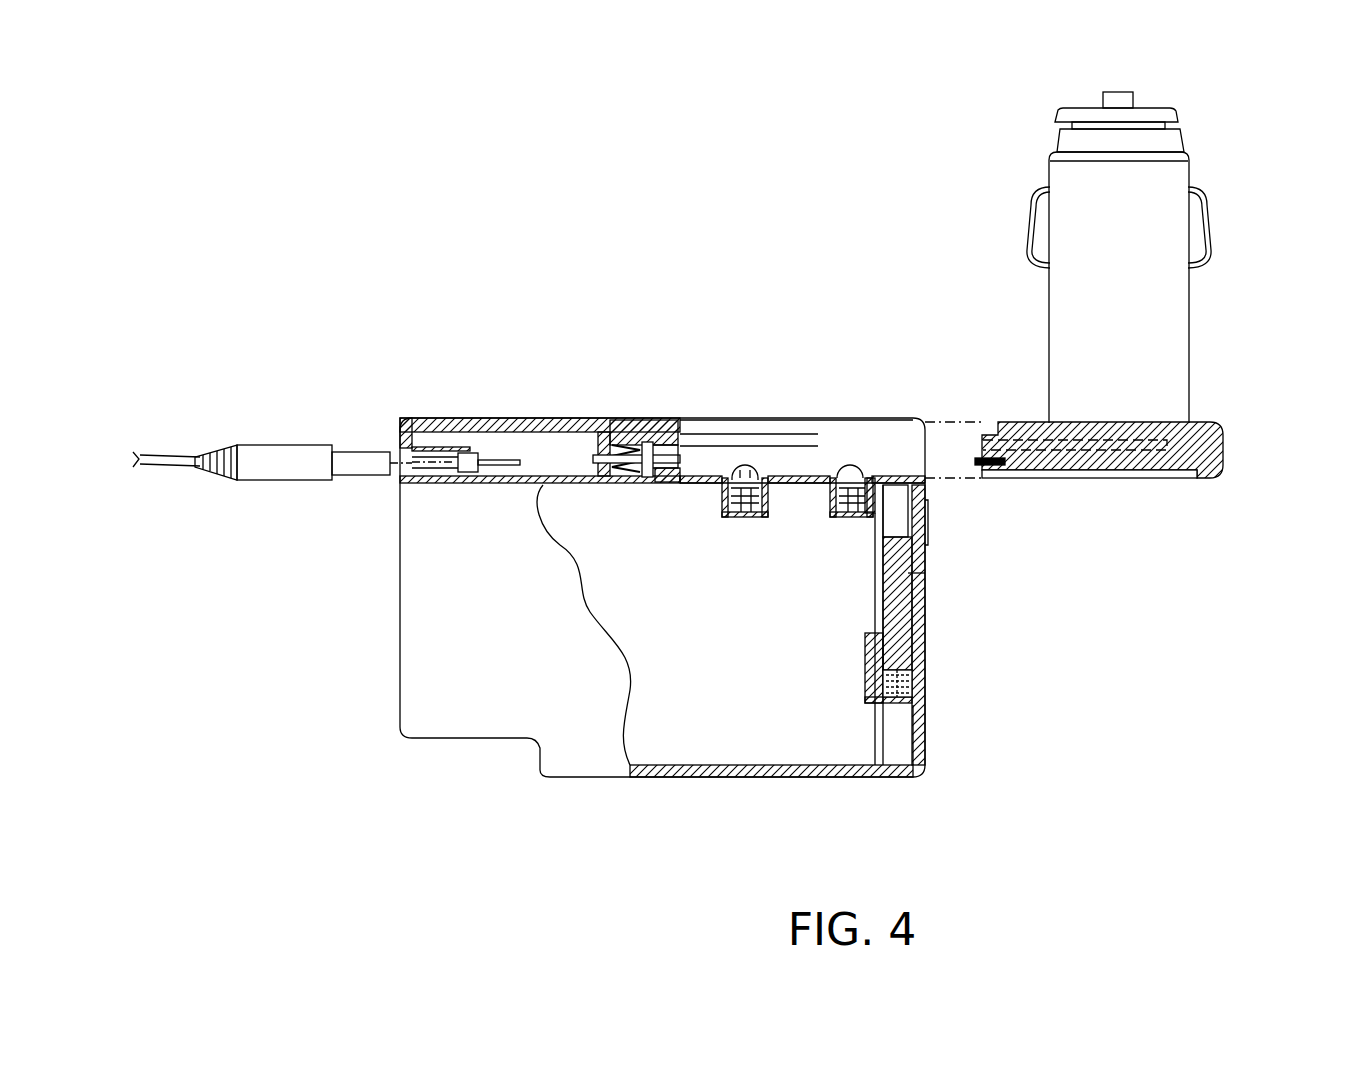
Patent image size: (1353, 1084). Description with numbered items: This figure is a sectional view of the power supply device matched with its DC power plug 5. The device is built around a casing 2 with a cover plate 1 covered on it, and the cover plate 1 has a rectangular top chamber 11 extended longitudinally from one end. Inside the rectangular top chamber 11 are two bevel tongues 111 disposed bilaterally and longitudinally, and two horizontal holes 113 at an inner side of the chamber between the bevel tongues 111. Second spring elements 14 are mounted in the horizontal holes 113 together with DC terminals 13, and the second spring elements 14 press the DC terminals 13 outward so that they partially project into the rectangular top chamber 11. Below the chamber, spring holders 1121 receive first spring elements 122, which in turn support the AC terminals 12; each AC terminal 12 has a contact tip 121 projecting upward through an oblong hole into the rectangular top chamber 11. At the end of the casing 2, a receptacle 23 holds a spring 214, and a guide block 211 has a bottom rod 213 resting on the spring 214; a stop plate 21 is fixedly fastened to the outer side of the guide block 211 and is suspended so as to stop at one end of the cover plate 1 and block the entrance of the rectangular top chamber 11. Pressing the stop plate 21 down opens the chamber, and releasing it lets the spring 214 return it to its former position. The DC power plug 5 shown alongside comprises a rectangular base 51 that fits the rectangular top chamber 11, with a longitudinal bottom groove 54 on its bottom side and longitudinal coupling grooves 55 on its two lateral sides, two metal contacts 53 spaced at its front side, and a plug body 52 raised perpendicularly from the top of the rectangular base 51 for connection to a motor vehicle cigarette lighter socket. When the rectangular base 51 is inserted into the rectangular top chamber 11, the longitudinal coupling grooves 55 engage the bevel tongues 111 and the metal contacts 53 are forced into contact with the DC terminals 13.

The cover plate 1 is at (455, 420).
The rectangular top chamber 11 is at (848, 460).
The bevel tongues 111 is at (733, 420).
The spring holders 1121 is at (738, 505).
The horizontal holes 113 is at (627, 420).
The AC terminals 12 is at (764, 470).
The contact tip 121 is at (762, 420).
The first spring elements 122 is at (752, 520).
The DC terminals 13 is at (693, 420).
The second spring elements 14 is at (607, 420).
The casing 2 is at (415, 603).
The stop plate 21 is at (928, 497).
The guide block 211 is at (893, 583).
The bottom rod 213 is at (918, 715).
The spring 214 is at (912, 690).
The receptacle 23 is at (925, 637).
The DC power plug 5 is at (1205, 162).
The rectangular base 51 is at (1222, 426).
The plug body 52 is at (1150, 323).
The metal contacts 53 is at (975, 458).
The longitudinal bottom groove 54 is at (1167, 478).
The longitudinal coupling grooves 55 is at (1112, 480).